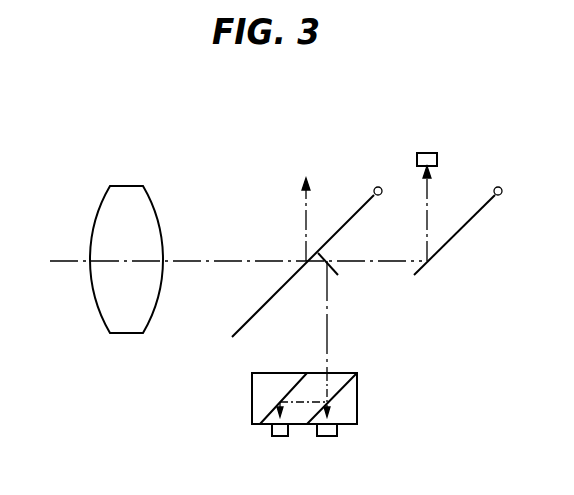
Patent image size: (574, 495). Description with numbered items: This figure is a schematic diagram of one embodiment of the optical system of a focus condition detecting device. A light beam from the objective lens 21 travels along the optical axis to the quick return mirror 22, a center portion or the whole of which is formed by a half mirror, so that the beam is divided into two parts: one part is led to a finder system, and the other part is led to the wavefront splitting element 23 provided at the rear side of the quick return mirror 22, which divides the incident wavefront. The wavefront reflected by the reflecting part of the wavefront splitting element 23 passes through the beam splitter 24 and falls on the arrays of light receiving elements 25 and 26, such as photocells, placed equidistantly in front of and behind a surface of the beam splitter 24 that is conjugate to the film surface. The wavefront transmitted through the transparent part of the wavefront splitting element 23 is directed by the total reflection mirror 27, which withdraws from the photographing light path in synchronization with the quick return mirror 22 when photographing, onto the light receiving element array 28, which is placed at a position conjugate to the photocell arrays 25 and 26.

The objective lens 21 is at (158, 211).
The quick return mirror 22 is at (352, 211).
The wavefront splitting element 23 is at (325, 257).
The beam splitter 24 is at (348, 400).
The array of light receiving elements 25 is at (338, 431).
The array of light receiving elements 26 is at (273, 432).
The total reflection mirror 27 is at (473, 218).
The light receiving element array 28 is at (437, 153).